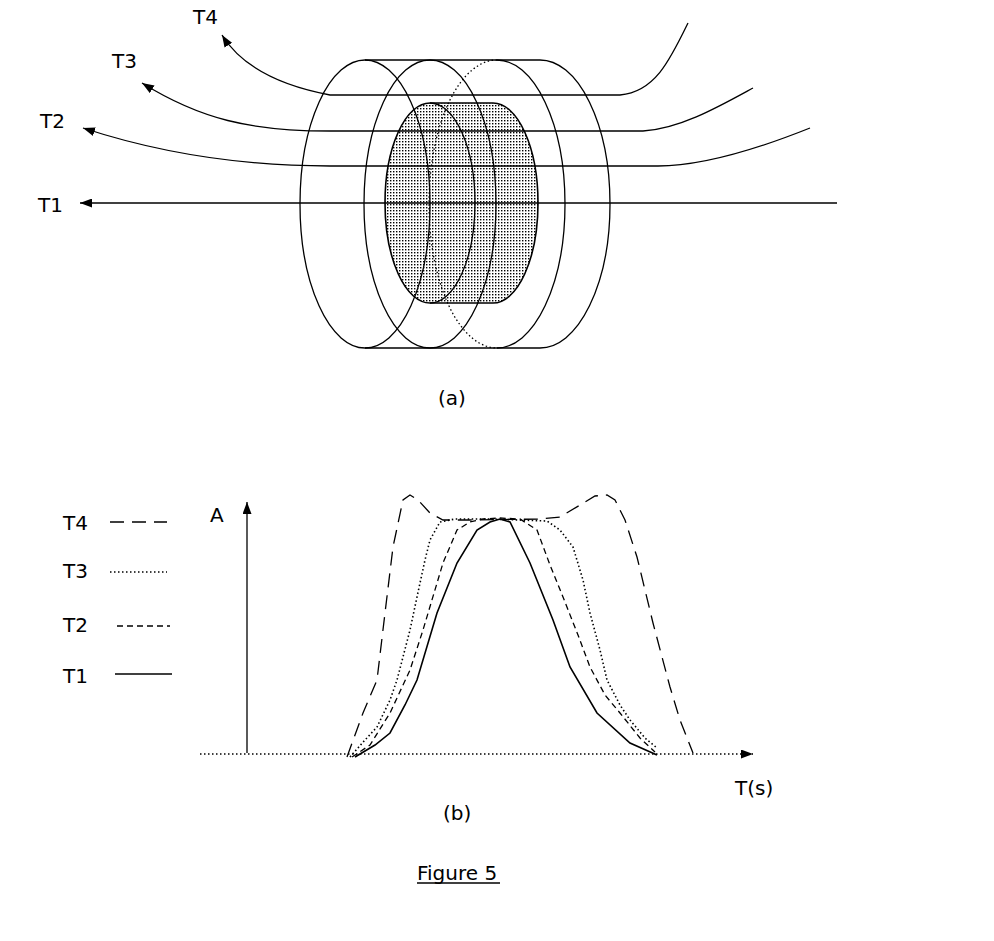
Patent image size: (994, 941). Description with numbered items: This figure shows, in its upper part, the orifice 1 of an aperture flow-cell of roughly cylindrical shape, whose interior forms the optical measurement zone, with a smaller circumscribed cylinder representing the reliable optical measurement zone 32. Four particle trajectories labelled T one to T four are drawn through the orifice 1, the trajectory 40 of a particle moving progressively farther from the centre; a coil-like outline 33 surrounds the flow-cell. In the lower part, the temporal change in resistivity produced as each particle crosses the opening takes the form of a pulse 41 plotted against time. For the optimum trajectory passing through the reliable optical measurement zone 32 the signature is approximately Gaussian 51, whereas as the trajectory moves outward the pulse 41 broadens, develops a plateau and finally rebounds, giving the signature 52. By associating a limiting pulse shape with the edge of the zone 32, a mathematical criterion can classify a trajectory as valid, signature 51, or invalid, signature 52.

The orifice 1 is at (605, 240).
The reliable optical measurement zone 32 is at (522, 279).
The coil winding 33 is at (528, 63).
The trajectory 40 is at (768, 71).
The pulse 41 is at (408, 623).
The Gaussian signature 51 is at (573, 668).
The invalid signature 52 is at (640, 557).